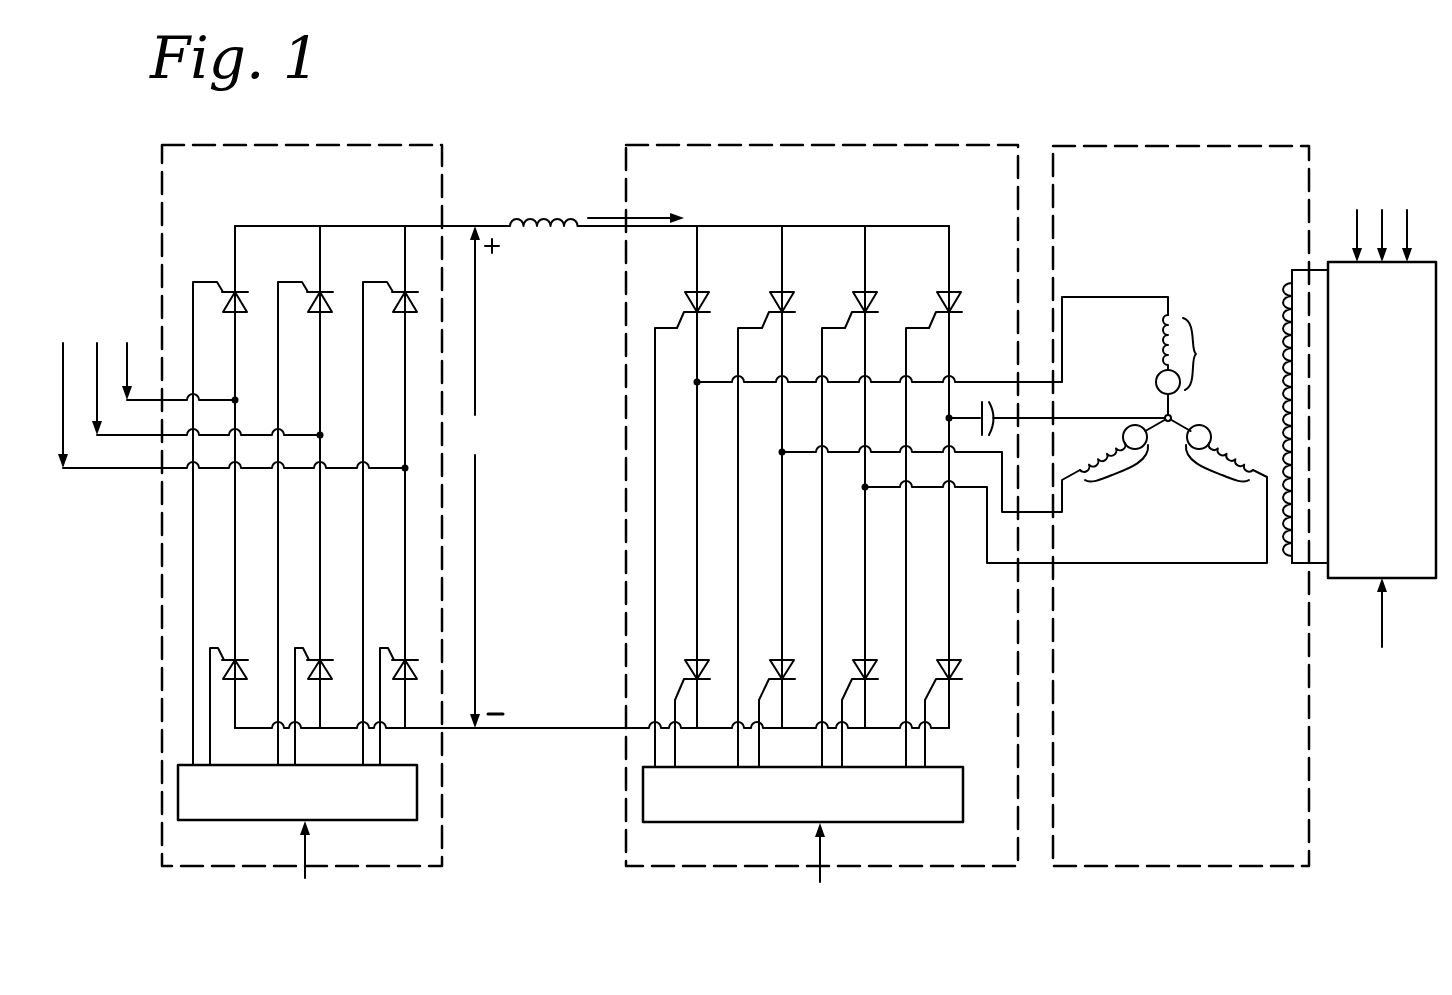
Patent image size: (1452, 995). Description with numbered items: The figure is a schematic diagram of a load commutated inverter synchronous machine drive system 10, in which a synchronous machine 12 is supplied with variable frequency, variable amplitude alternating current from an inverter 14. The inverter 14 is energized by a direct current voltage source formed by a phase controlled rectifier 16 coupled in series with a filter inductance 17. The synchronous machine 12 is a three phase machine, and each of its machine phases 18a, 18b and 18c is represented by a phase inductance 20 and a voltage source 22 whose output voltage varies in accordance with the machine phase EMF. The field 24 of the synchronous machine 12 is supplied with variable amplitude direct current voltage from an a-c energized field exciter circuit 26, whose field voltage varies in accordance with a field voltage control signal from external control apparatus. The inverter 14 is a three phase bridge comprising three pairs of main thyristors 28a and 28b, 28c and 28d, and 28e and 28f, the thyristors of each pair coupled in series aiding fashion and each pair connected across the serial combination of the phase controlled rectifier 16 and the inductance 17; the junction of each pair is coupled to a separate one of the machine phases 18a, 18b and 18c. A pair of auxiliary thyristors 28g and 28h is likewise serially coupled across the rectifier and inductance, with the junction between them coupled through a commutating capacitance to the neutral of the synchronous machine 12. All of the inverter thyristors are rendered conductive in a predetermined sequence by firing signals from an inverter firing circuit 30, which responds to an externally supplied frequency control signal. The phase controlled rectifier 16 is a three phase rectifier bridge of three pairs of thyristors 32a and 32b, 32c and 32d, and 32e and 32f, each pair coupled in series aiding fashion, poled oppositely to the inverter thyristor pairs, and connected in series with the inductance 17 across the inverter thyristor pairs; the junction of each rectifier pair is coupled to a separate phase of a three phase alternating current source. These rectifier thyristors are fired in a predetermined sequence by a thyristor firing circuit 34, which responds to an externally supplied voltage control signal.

The load commutated inverter synchronous machine drive system 10 is at (758, 71).
The synchronous machine 12 is at (1182, 195).
The inverter 14 is at (759, 174).
The phase controlled rectifier 16 is at (299, 191).
The filter inductance 17 is at (530, 215).
The machine phase 18a is at (1198, 354).
The machine phase 18b is at (1123, 469).
The machine phase 18c is at (1215, 469).
The phase inductance 20 is at (1160, 340).
The voltage source 22 is at (1156, 381).
The field 24 is at (1272, 318).
The field exciter circuit 26 is at (1370, 477).
The inverter main thyristor 28a is at (702, 292).
The inverter main thyristor 28b is at (692, 660).
The inverter main thyristor 28c is at (787, 292).
The inverter main thyristor 28d is at (777, 660).
The inverter main thyristor 28e is at (870, 292).
The inverter main thyristor 28f is at (860, 660).
The inverter auxiliary thyristor 28g is at (954, 292).
The inverter auxiliary thyristor 28h is at (944, 660).
The inverter firing circuit 30 is at (980, 414).
The phase controlled rectifier thyristor 32a is at (232, 312).
The phase controlled rectifier thyristor 32b is at (232, 658).
The phase controlled rectifier thyristor 32c is at (317, 312).
The phase controlled rectifier thyristor 32d is at (317, 658).
The phase controlled rectifier thyristor 32e is at (402, 312).
The phase controlled rectifier thyristor 32f is at (402, 658).
The thyristor firing circuit 34 is at (268, 822).